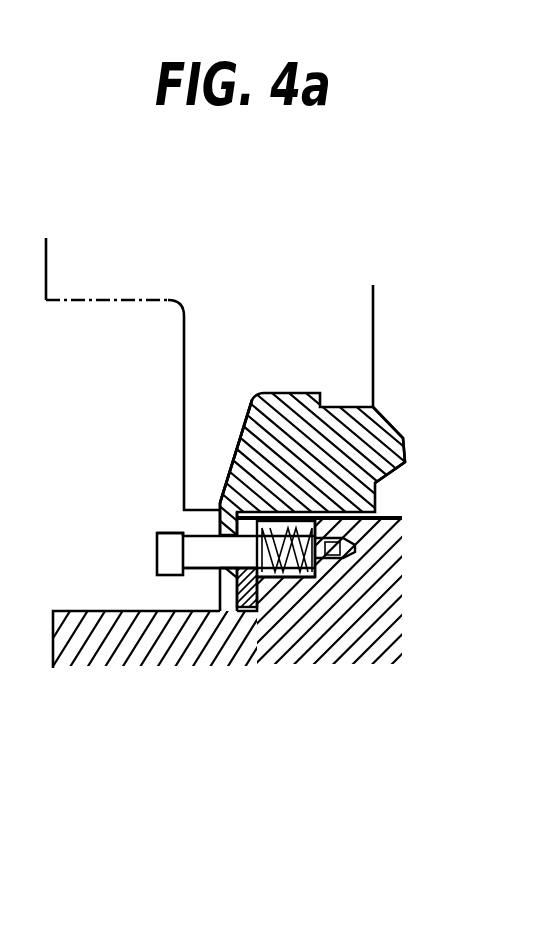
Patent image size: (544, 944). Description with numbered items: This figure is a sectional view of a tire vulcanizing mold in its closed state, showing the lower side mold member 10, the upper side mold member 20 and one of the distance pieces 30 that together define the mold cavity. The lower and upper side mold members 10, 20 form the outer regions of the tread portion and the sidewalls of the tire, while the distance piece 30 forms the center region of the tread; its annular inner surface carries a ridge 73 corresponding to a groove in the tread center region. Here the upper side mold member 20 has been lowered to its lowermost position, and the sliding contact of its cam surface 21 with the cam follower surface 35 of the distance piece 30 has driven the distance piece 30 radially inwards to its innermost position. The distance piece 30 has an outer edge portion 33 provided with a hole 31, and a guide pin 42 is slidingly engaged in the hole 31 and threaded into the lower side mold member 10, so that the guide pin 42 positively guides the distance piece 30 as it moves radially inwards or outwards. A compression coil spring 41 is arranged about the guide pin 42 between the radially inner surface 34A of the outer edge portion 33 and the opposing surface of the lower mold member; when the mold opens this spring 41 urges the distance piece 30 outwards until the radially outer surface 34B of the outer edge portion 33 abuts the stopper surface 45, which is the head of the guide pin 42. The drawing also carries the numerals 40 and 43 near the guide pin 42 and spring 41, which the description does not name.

The lower side mold member 10 is at (407, 628).
The upper side mold member 20 is at (100, 303).
The cam surface 21 is at (250, 416).
The cam follower surface 35 is at (251, 415).
The distance piece 30 is at (390, 430).
The hole 31 is at (232, 477).
The outer edge portion 33 is at (227, 595).
The radially inner surface 34A is at (267, 582).
The radially outer surface 34B is at (220, 578).
The pin 40 is at (149, 539).
The compression coil spring 41 is at (360, 573).
The guide pin 42 is at (208, 566).
The spring 43 is at (290, 580).
The stopper surface 45 is at (189, 532).
The ridge 73 is at (403, 453).